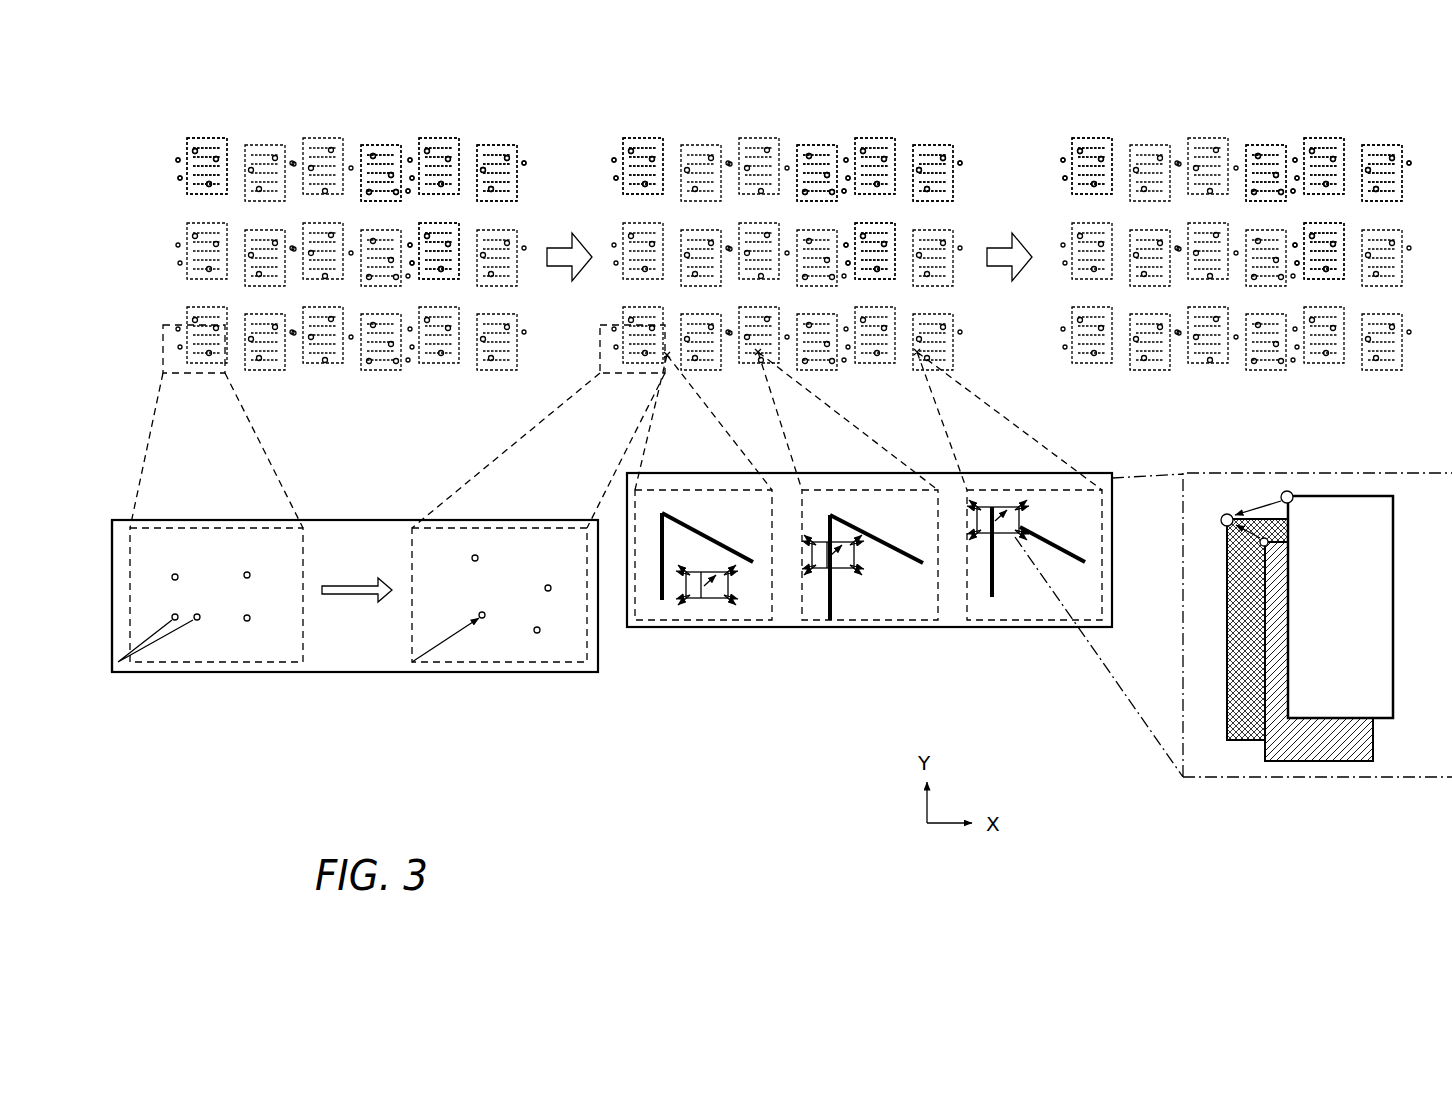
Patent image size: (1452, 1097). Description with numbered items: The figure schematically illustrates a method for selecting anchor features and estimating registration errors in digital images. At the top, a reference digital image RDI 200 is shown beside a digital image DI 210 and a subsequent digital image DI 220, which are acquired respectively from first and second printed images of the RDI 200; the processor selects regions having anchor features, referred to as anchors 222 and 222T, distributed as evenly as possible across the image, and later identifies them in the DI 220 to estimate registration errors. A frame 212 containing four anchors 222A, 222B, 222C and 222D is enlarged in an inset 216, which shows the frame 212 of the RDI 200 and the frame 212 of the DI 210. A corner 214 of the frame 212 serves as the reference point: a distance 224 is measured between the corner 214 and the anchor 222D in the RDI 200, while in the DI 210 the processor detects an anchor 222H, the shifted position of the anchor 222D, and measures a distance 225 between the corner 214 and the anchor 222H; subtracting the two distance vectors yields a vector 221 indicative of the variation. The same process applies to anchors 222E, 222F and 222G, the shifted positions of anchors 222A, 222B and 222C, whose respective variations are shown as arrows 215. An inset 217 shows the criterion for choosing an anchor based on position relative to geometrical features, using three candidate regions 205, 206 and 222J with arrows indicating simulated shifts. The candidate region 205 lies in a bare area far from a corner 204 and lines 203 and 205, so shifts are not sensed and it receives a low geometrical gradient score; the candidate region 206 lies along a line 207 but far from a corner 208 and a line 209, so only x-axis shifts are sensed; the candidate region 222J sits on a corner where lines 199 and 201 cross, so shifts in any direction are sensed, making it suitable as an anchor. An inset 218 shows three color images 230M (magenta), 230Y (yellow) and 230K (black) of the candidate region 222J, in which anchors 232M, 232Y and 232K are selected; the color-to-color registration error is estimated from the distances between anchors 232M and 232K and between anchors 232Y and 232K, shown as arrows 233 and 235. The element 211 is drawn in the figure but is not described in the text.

The RDI 200 is at (336, 70).
The DI 210 is at (796, 70).
The DI 220 is at (1233, 70).
The anchor 222T is at (215, 140).
The anchors 222 is at (438, 233).
The corner 214 is at (163, 372).
The frame 212 is at (234, 372).
The inset 216 is at (392, 673).
The distance 224 is at (128, 658).
The anchor 222A is at (175, 574).
The vector 221 is at (192, 617).
The anchor 222D is at (182, 621).
The arrows 215 is at (249, 613).
The distance 225 is at (165, 628).
The anchor 222H is at (199, 621).
The anchor 222C is at (248, 622).
The anchor 222B is at (252, 582).
The anchor 222E is at (473, 556).
The anchor 222F is at (548, 585).
The anchor 222G is at (537, 633).
The line 203 is at (660, 563).
The corner 204 is at (662, 511).
The candidate region 205 is at (697, 532).
The feature box 211 is at (710, 599).
The inset 217 is at (838, 622).
The line 207 is at (828, 606).
The corner 208 is at (830, 513).
The line 209 is at (908, 553).
The candidate region 206 is at (856, 575).
The candidate region 222J is at (1010, 545).
The line 201 is at (994, 599).
The line 199 is at (1062, 542).
The color image 230K is at (1245, 742).
The color image 230Y is at (1318, 763).
The color image 230M is at (1380, 495).
The anchor 232M is at (1289, 491).
The anchor 232K is at (1220, 522).
The anchor 232Y is at (1260, 546).
The arrow 233 is at (1270, 505).
The arrow 235 is at (1250, 540).
The inset 218 is at (1438, 779).